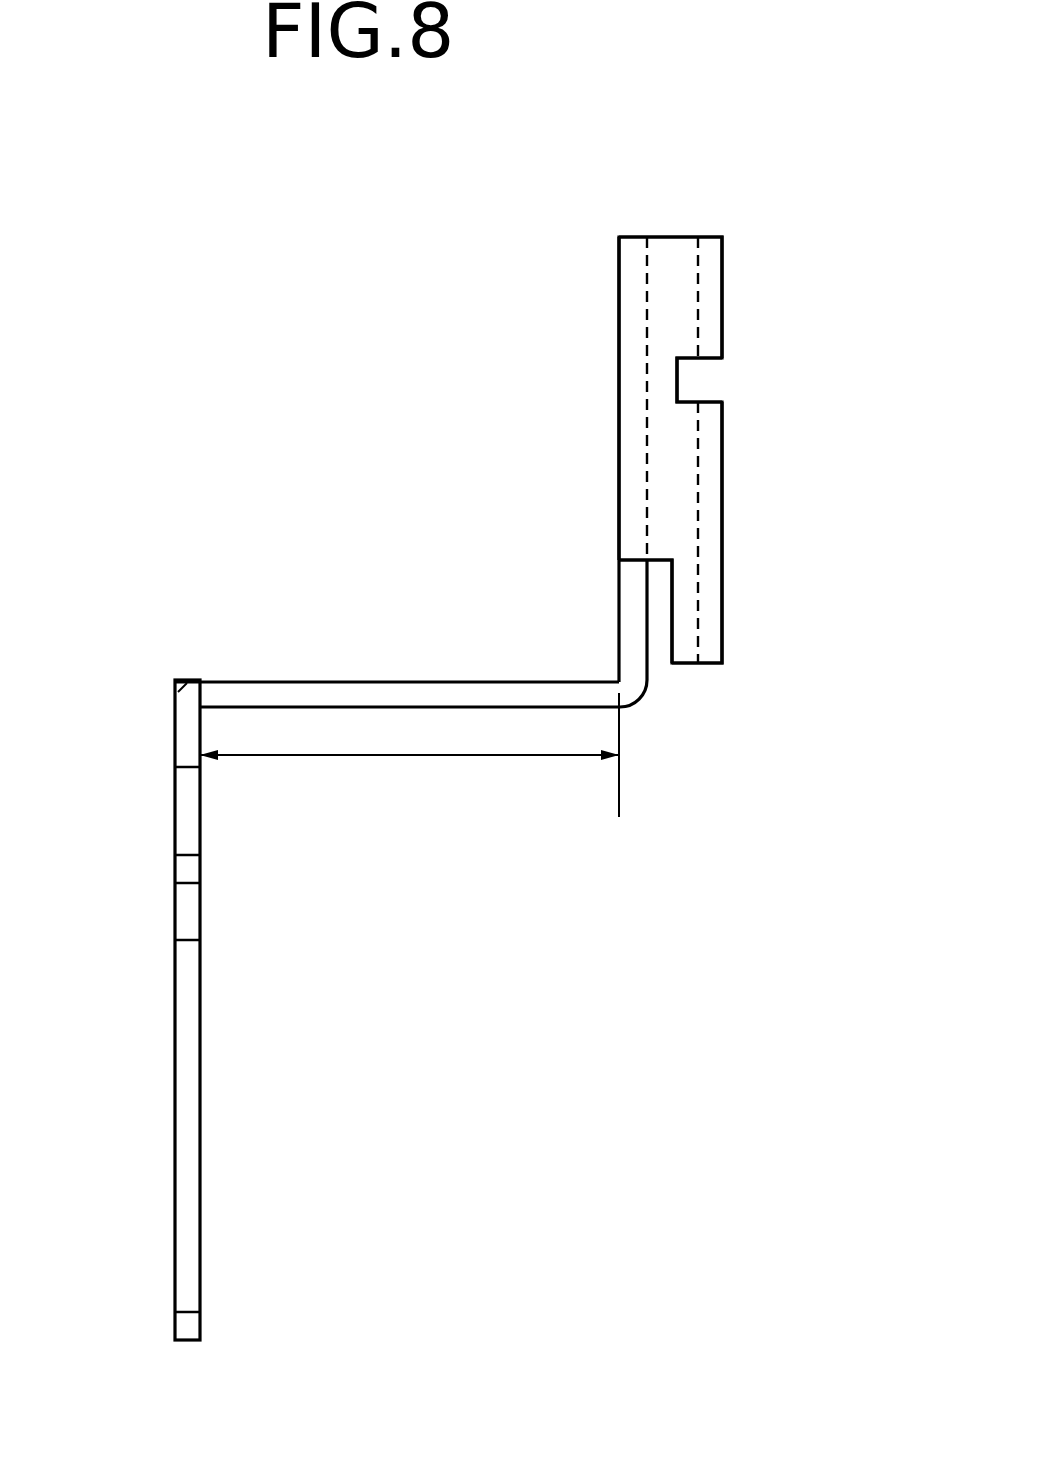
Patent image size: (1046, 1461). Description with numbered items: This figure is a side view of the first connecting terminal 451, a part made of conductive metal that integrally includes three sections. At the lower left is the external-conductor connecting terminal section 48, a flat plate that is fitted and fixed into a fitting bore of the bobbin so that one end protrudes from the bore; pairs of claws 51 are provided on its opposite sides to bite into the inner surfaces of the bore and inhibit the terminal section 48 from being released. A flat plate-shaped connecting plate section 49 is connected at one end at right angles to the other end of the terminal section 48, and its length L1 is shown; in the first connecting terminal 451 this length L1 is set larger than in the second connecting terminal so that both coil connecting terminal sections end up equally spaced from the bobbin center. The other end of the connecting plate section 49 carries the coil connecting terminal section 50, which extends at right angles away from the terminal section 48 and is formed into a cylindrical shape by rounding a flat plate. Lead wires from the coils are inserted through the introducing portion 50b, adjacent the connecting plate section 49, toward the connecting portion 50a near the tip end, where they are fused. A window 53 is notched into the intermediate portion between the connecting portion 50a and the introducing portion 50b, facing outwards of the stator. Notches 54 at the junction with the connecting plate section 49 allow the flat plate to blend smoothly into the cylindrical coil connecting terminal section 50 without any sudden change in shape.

The external-conductor connecting terminal section 48 is at (186, 1042).
The connecting plate section 49 is at (400, 688).
The coil connecting terminal section 50 is at (738, 511).
The connecting portion 50a is at (712, 308).
The introducing portion 50b is at (715, 560).
The claws 51 is at (178, 882).
The window 53 is at (690, 400).
The notches 54 is at (672, 636).
The first connecting terminal 451 is at (562, 412).
The length of the connecting plate section L1 is at (388, 757).